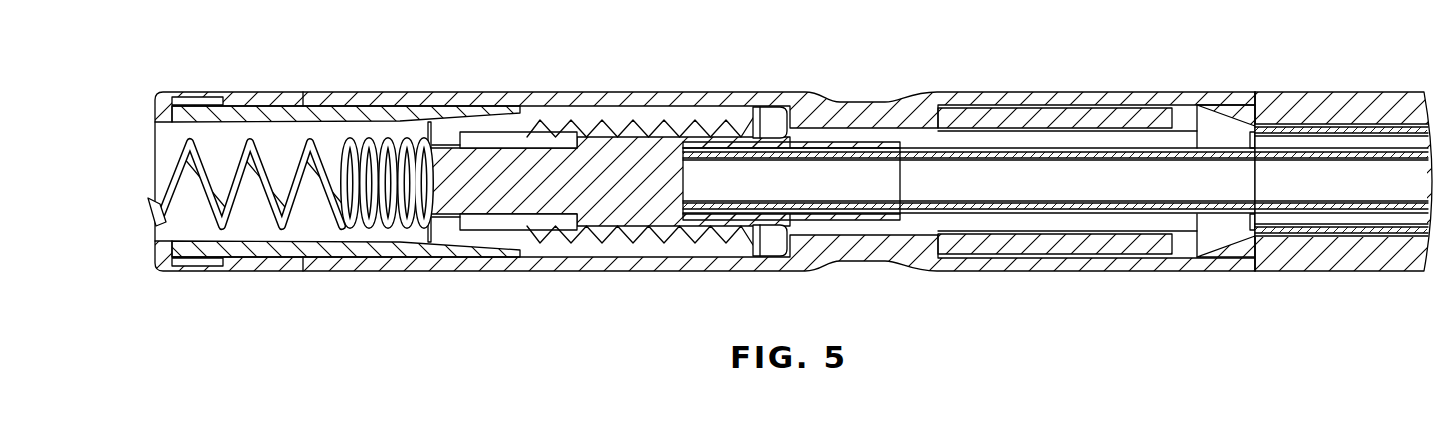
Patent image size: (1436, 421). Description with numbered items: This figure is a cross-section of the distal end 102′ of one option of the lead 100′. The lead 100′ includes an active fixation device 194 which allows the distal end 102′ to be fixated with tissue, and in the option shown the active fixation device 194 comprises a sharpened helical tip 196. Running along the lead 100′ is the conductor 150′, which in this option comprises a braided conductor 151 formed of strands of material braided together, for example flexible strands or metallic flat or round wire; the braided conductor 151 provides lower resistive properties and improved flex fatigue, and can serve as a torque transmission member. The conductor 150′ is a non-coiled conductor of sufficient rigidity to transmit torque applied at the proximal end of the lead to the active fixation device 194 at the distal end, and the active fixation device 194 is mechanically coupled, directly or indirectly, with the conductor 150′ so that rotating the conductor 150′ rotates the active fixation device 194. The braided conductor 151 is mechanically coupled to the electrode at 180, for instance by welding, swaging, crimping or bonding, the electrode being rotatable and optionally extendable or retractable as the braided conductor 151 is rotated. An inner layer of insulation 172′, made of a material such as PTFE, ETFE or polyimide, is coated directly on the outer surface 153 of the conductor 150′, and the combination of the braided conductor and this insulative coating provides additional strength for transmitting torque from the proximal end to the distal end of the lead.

The lead 100′ is at (1073, 72).
The distal end 102′ is at (153, 276).
The active fixation device 194 is at (283, 218).
The sharpened helical tip 196 is at (174, 178).
The electrode coupling location 180 is at (712, 205).
The inner layer of insulation 172′ is at (915, 213).
The conductor 150′ is at (1067, 205).
The outer surface 153 is at (983, 212).
The braided conductor 151 is at (1140, 202).